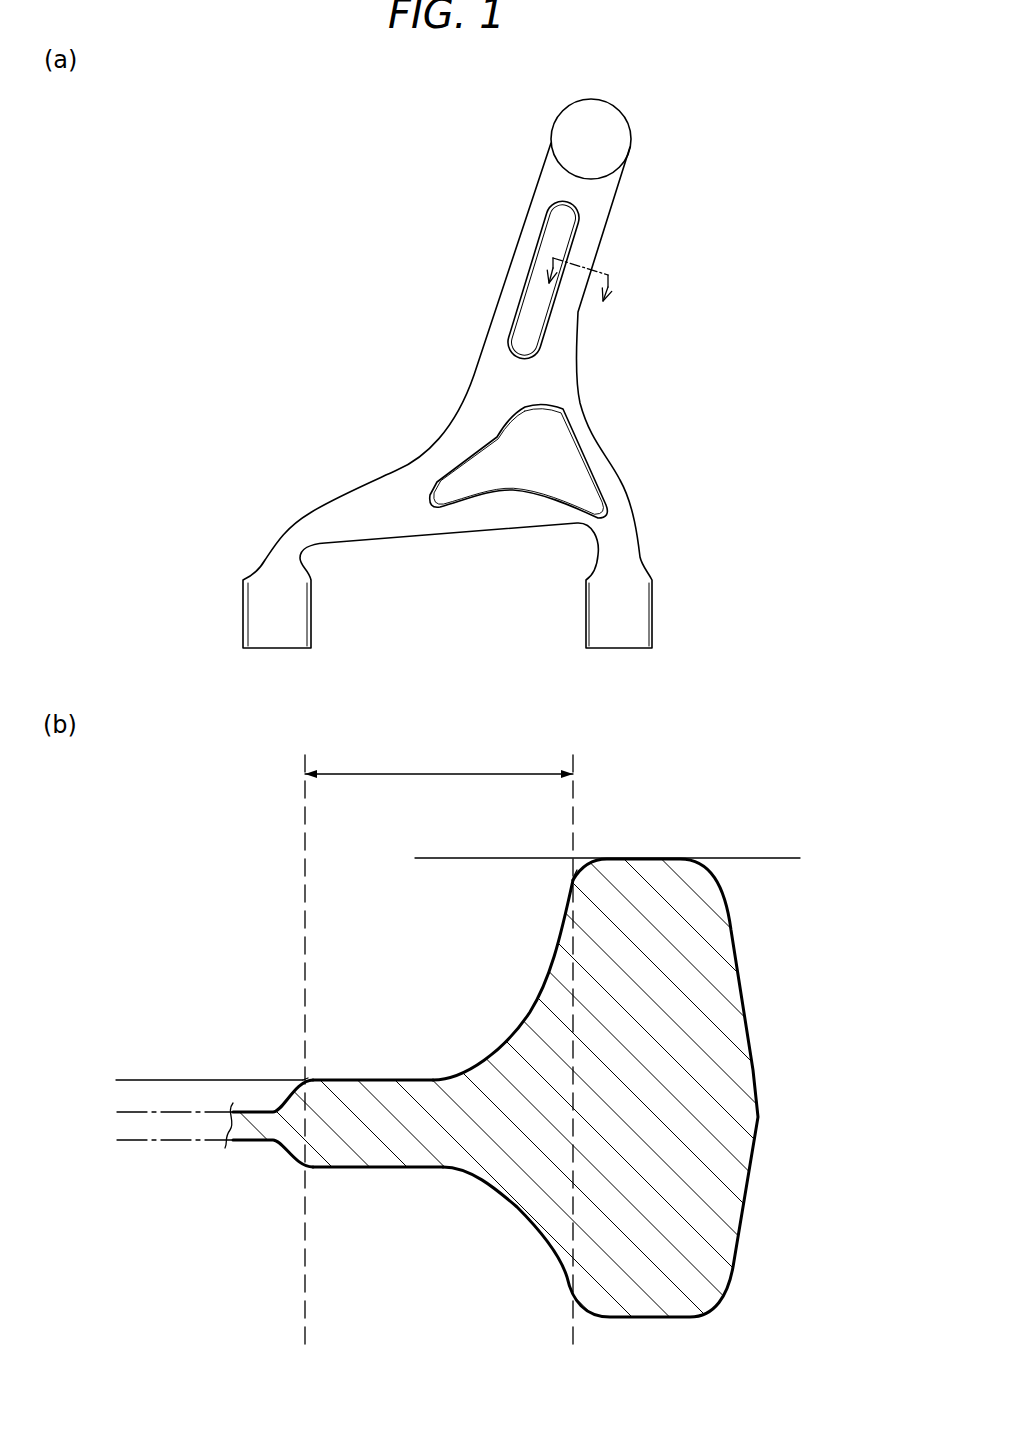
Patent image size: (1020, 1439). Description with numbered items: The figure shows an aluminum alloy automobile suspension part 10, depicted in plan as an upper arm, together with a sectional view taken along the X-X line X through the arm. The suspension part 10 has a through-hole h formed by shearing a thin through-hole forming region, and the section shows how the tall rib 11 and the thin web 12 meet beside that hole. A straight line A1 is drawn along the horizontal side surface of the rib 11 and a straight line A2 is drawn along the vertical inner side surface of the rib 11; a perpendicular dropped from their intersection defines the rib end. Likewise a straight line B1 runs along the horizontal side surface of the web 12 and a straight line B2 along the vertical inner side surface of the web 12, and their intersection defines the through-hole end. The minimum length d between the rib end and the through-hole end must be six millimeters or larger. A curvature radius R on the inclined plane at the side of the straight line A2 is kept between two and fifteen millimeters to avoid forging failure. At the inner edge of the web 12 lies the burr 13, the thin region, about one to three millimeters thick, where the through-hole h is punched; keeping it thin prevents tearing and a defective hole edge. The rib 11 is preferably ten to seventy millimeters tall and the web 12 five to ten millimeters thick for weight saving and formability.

The suspension part 10 is at (673, 225).
The rib 11 is at (698, 1293).
The web 12 is at (415, 1145).
The burr 13 is at (252, 1132).
The through-hole h is at (565, 237).
The X-X line X is at (574, 295).
The minimum length d is at (439, 760).
The straight line A1 is at (624, 860).
The straight line A2 is at (573, 878).
The straight line B1 is at (192, 1080).
The straight line B2 is at (308, 1075).
The curvature radius R is at (498, 1042).